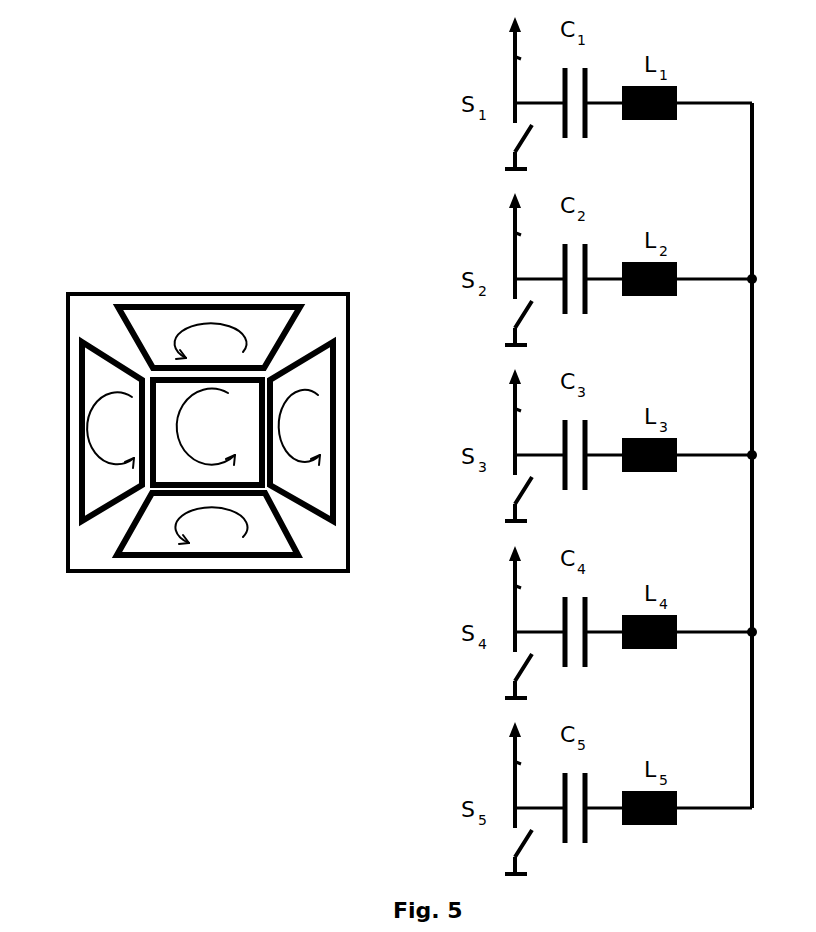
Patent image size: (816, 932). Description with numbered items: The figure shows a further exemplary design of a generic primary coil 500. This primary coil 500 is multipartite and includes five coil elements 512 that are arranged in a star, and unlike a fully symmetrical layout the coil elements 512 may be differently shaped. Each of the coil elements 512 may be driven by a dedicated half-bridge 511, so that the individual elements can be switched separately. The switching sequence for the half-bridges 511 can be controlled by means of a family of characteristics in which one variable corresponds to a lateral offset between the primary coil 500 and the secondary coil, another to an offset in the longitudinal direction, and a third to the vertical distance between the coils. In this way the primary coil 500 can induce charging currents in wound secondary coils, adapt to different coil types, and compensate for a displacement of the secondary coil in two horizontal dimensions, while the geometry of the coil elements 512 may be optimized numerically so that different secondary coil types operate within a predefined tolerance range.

The primary coil 500 is at (192, 590).
The half-bridge 511 is at (485, 67).
The coil element 512 is at (167, 305).